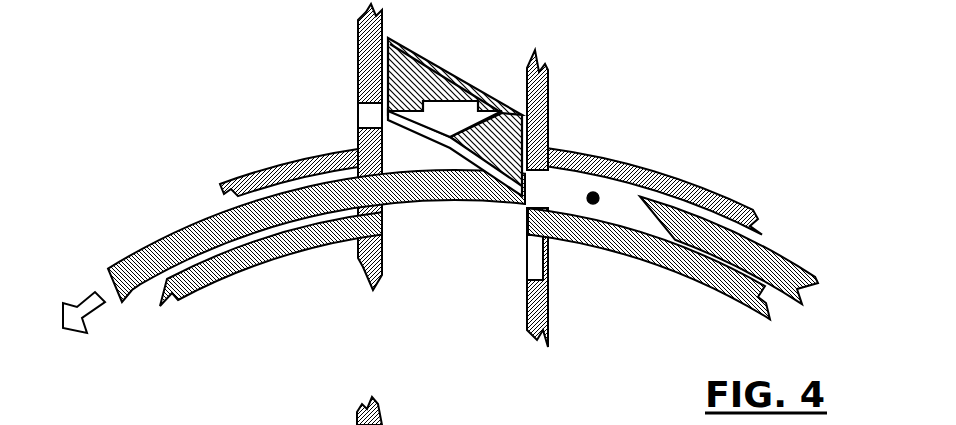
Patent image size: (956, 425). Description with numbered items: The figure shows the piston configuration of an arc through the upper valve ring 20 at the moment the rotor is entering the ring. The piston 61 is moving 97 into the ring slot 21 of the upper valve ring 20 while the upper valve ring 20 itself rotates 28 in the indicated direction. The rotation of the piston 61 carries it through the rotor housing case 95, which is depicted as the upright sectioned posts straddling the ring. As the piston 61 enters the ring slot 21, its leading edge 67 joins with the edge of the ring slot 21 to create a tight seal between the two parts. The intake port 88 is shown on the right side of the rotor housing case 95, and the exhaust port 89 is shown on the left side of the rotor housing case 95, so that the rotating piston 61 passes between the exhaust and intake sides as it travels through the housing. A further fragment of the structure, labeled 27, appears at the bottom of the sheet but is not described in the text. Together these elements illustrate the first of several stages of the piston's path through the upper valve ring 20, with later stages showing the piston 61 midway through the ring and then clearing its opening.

The upper valve ring 20 is at (787, 260).
The ring slot 21 is at (597, 193).
The post 27 is at (452, 411).
The rotation of the upper valve ring 28 is at (90, 315).
The piston 61 is at (408, 48).
The leading edge 67 is at (403, 128).
The intake port 88 is at (548, 255).
The exhaust port 89 is at (358, 122).
The rotor housing case 95 is at (549, 119).
The movement of the piston 97 is at (463, 87).